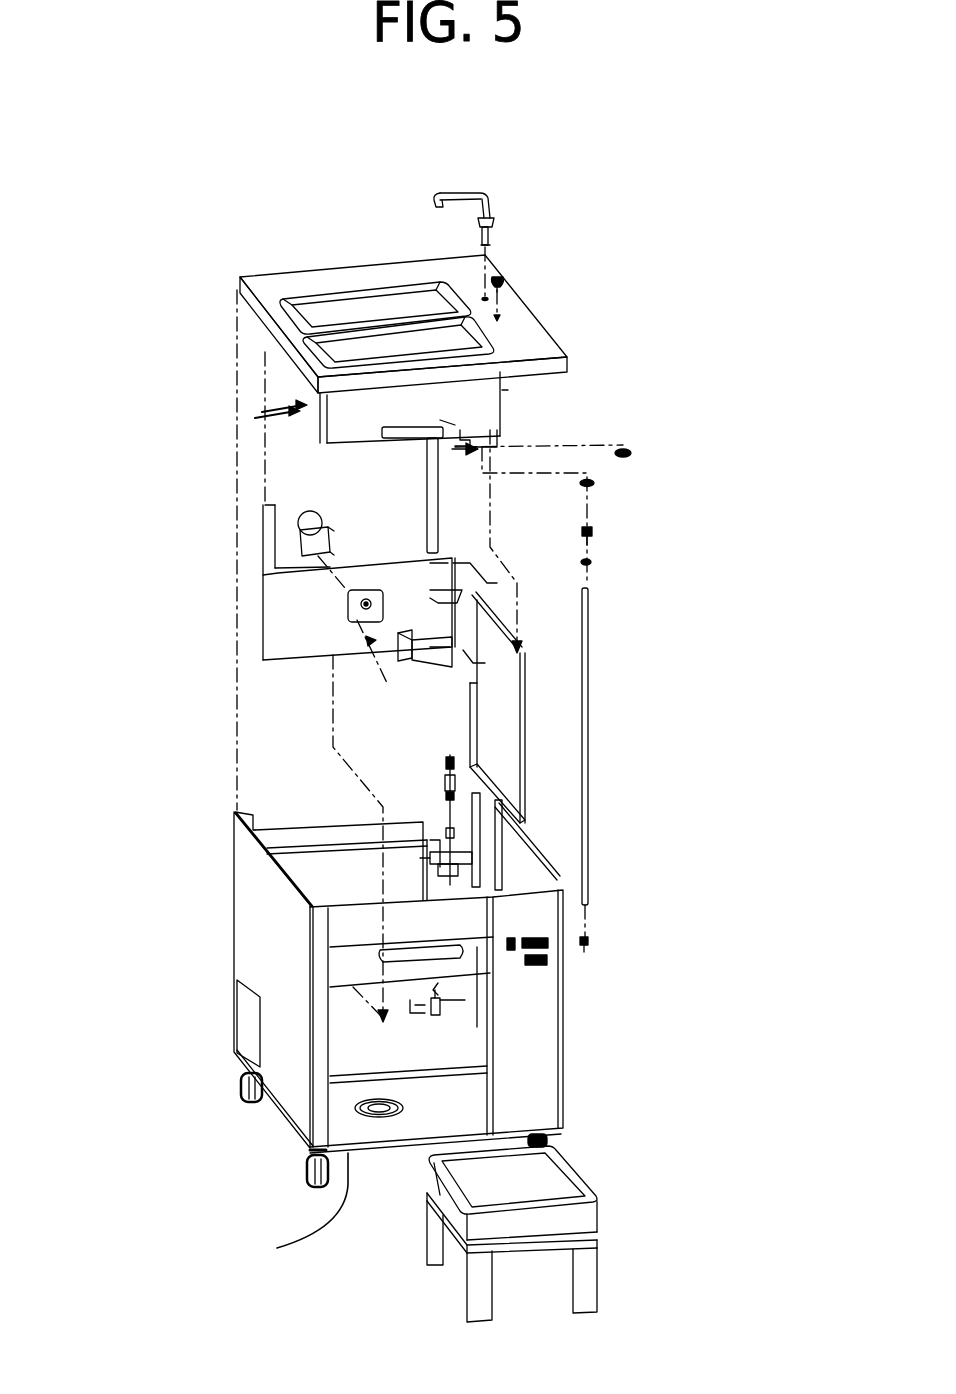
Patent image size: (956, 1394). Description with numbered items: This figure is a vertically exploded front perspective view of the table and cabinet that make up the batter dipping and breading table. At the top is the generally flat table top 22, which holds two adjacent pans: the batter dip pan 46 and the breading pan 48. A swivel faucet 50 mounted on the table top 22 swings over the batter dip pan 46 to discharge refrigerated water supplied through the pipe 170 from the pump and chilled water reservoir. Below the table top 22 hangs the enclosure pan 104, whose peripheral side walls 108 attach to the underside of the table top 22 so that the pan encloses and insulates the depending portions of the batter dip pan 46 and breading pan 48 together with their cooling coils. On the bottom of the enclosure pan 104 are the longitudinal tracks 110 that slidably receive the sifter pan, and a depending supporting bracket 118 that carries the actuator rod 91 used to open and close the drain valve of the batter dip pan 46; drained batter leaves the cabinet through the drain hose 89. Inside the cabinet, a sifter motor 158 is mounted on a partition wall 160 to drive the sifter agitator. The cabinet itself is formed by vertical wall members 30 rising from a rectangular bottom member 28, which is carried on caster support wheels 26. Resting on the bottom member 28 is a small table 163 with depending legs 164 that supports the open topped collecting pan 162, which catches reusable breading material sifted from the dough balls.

The table top 22 is at (403, 278).
The support wheels 26 is at (319, 1130).
The bottom member 28 is at (290, 1229).
The vertical wall members 30 is at (332, 982).
The batter dip pan 46 is at (275, 331).
The breading pan 48 is at (274, 379).
The swivel faucet 50 is at (513, 216).
The drain hose 89 is at (561, 507).
The actuator rod 91 is at (540, 418).
The enclosure pan 104 is at (187, 467).
The peripheral side walls 108 is at (307, 484).
The longitudinal tracks 110 is at (390, 490).
The supporting bracket 118 is at (559, 391).
The sifter motor 158 is at (221, 588).
The partition wall 160 is at (226, 640).
The collecting pan 162 is at (557, 1177).
The table 163 is at (564, 1223).
The legs 164 is at (563, 1261).
The pipe 170 is at (637, 770).